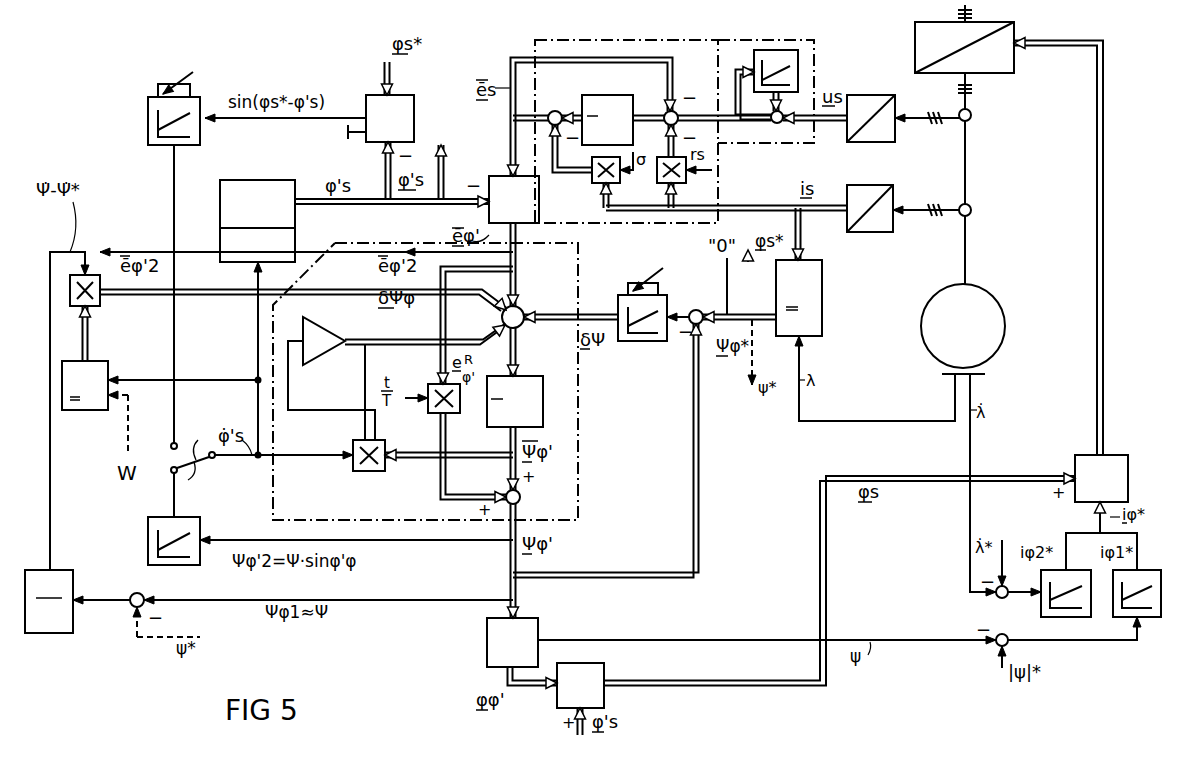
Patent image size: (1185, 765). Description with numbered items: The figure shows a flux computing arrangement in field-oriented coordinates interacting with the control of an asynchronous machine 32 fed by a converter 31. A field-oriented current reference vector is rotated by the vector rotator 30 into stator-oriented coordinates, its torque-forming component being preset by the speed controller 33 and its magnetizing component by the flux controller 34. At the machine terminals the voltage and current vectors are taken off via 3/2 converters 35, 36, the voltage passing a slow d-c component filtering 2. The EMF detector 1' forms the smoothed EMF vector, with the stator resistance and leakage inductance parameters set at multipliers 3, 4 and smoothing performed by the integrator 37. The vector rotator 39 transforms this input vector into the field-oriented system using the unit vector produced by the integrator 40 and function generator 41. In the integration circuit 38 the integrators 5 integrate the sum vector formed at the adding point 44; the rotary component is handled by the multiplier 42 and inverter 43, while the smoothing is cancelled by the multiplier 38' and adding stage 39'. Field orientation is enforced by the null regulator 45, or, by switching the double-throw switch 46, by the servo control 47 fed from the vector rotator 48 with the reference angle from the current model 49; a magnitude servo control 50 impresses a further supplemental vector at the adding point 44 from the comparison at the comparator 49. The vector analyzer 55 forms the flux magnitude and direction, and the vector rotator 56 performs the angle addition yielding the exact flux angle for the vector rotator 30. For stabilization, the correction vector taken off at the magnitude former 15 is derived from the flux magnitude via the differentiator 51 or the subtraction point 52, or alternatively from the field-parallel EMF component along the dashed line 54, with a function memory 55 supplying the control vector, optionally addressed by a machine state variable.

The EMF detector 1' is at (626, 117).
The d-c component filtering 2 is at (754, 42).
The multiplier 3 is at (686, 180).
The multiplier 4 is at (602, 183).
The integrators 5 is at (543, 406).
The magnitude former 15 is at (100, 300).
The vector rotator 30 is at (1128, 479).
The frequency converter 31 is at (915, 48).
The asynchronous machine 32 is at (997, 306).
The speed controller 33 is at (1041, 612).
The flux controller 34 is at (1155, 617).
The 3/2 converter 35 is at (895, 142).
The 3/2 converter 36 is at (893, 232).
The integrator 37 is at (606, 102).
The integration circuit 38 is at (443, 380).
The multiplier 38' is at (424, 384).
The vector rotator 39 is at (506, 187).
The adding stage 39' is at (533, 499).
The integrator 40 is at (220, 255).
The function generator 41 is at (220, 195).
The multiplier 42 is at (364, 472).
The inverter 43 is at (336, 330).
The adding point 44 is at (524, 328).
The null regulator 45 is at (148, 540).
The double-throw switch 46 is at (190, 476).
The servo control 47 is at (148, 122).
The vector rotator 48 is at (414, 118).
The current model 49 is at (822, 298).
The magnitude servo control 50 is at (636, 341).
The differentiator 51 is at (45, 636).
The subtraction point 52 is at (128, 585).
The dashed line 54 is at (118, 250).
The vector analyzer 55 is at (88, 410).
The vector rotator 56 is at (604, 675).